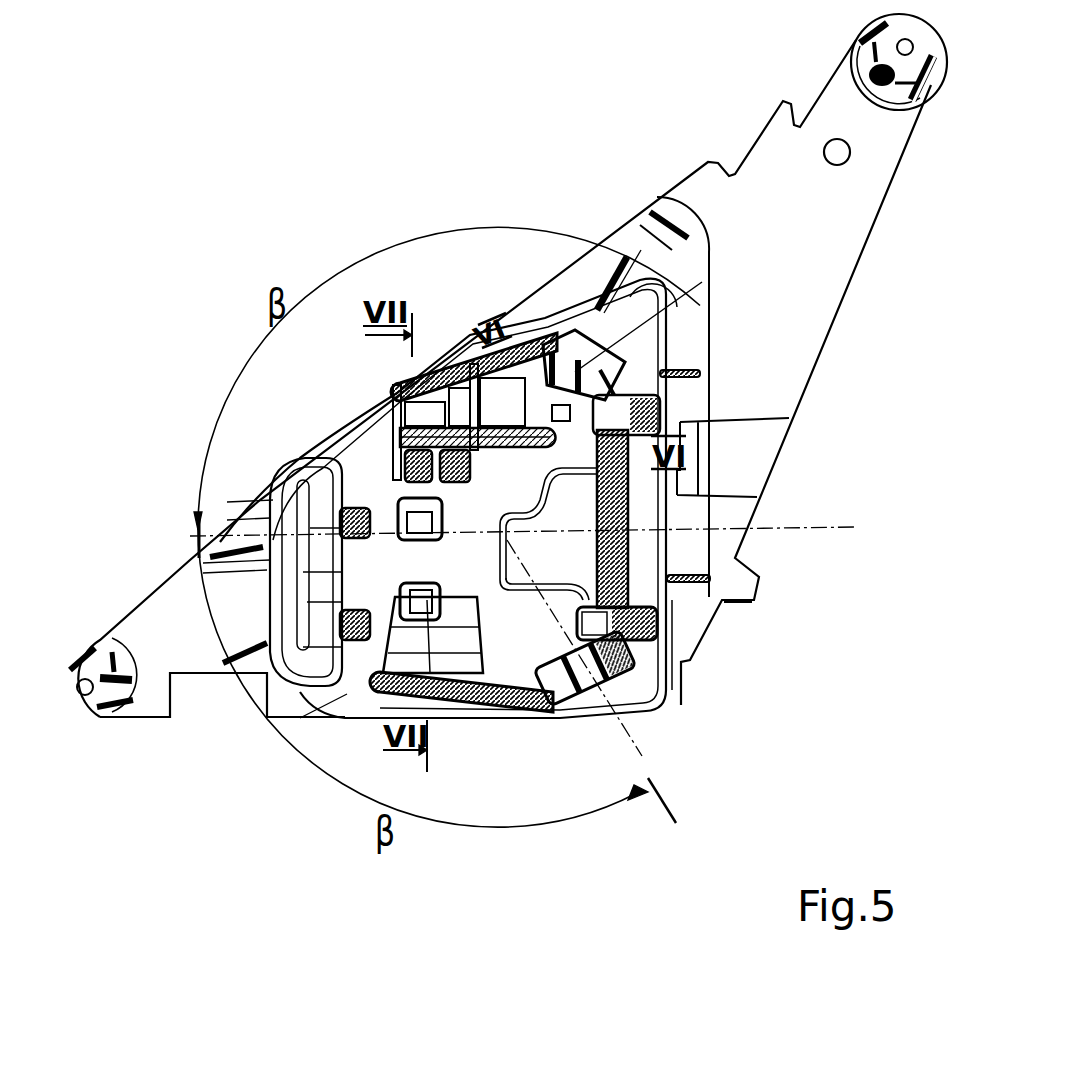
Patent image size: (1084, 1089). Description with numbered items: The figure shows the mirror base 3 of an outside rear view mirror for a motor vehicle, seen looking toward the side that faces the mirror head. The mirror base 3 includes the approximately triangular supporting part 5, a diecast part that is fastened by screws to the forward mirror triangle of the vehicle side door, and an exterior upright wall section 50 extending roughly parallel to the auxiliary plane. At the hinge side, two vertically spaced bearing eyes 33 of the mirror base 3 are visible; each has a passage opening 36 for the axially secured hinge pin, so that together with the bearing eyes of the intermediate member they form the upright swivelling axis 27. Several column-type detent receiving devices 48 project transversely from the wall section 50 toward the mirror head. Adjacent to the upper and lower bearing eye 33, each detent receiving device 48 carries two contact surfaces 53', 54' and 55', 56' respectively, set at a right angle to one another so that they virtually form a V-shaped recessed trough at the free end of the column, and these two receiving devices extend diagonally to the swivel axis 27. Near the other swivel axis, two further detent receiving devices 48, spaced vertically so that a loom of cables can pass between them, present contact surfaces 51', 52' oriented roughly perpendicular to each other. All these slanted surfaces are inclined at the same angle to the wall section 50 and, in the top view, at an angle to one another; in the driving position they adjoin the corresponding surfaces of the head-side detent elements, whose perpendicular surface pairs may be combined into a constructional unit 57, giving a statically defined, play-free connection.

The mirror base 3 is at (898, 184).
The supporting part 5 is at (848, 250).
The upright swivelling axis 27 is at (672, 669).
The bearing eye 33 is at (658, 392).
The passage opening 36 is at (752, 603).
The detent receiving device 48 is at (565, 400).
The exterior upright wall section 50 is at (340, 688).
The contact surface 51' is at (333, 536).
The contact surface 52' is at (438, 602).
The contact surface 53' is at (547, 322).
The contact surface 54' is at (648, 458).
The contact surface 55' is at (651, 681).
The contact surface 56' is at (585, 704).
The constructional unit 57 is at (560, 414).